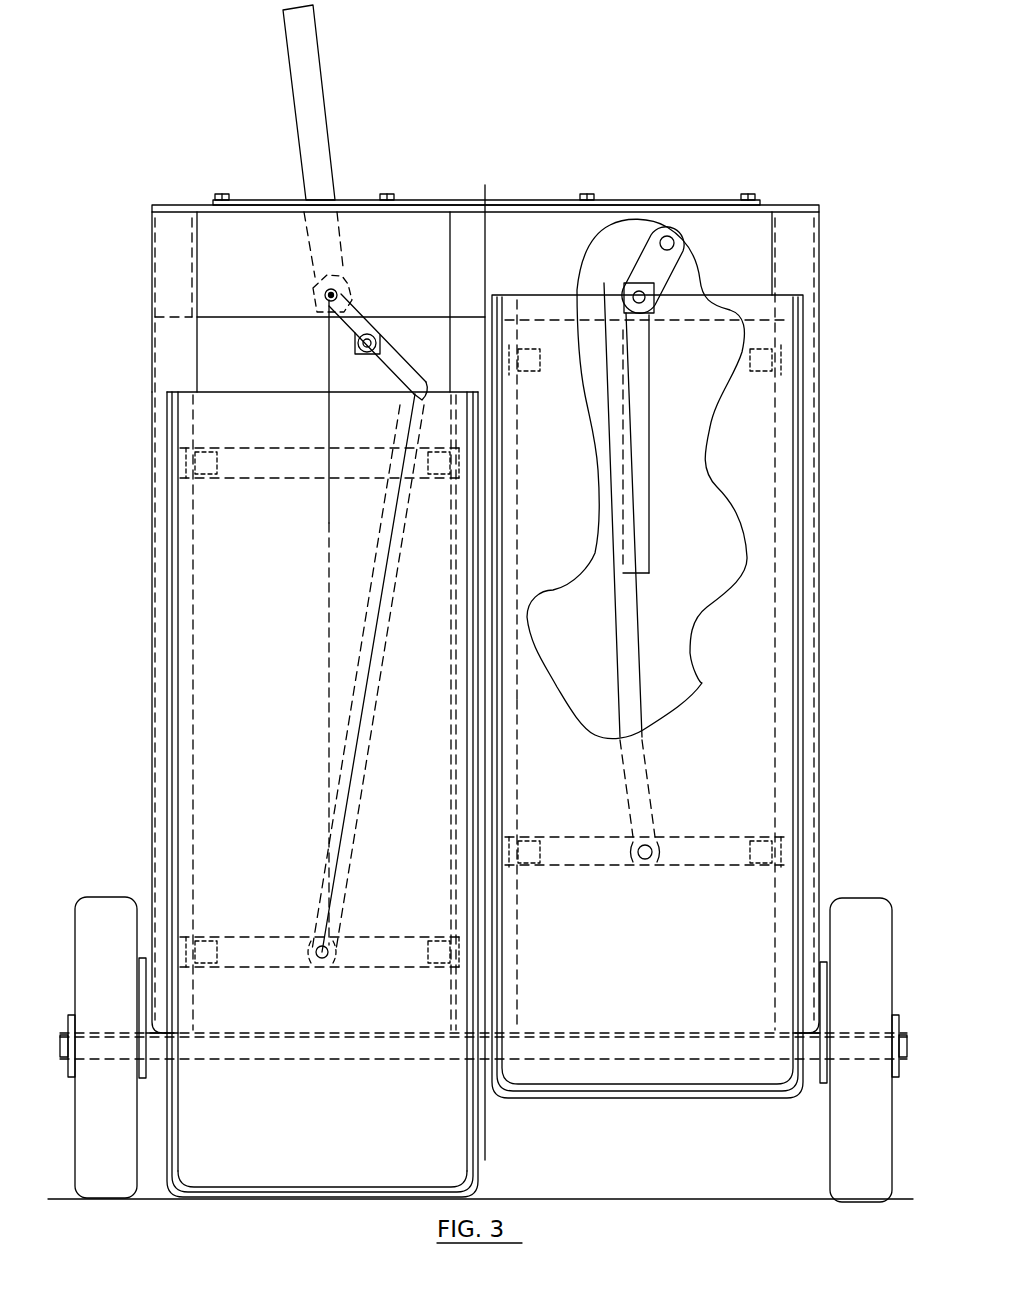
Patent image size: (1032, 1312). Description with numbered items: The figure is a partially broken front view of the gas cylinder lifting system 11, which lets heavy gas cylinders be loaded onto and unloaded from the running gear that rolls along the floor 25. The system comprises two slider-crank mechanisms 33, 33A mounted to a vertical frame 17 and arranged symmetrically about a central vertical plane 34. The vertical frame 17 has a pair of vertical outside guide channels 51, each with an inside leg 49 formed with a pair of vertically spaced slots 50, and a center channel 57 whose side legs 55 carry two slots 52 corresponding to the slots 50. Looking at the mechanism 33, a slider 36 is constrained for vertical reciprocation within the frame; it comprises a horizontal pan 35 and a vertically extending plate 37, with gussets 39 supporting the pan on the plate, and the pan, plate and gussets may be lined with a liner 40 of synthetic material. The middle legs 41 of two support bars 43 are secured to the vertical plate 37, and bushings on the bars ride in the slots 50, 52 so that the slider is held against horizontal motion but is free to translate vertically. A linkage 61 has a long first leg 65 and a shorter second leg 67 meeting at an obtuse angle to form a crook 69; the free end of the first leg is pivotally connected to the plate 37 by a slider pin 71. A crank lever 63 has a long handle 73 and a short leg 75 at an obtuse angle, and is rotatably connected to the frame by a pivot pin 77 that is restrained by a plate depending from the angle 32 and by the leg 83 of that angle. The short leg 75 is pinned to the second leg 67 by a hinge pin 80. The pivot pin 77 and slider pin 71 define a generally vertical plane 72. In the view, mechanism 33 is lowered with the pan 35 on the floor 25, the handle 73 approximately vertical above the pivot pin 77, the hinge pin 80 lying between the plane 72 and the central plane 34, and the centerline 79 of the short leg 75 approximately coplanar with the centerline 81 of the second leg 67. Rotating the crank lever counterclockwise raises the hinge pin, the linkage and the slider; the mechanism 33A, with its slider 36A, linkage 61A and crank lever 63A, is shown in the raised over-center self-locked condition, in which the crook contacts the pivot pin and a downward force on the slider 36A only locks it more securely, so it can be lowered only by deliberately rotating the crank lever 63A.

The gas cylinder lifting system 11 is at (127, 645).
The vertical frame 17 is at (148, 284).
The floor 25 is at (636, 1197).
The angle 32 is at (178, 198).
The slider-crank mechanism 33 is at (246, 1134).
The slider-crank mechanism 33A is at (597, 1100).
The central vertical plane 34 is at (487, 1135).
The horizontal pan 35 is at (392, 1193).
The slider 36 is at (170, 810).
The slider 36A is at (765, 1100).
The vertically extending plate 37 is at (266, 759).
The gussets 39 is at (165, 623).
The liner 40 is at (178, 722).
The middle legs 41 is at (235, 482).
The support bars 43 is at (291, 482).
The inside leg 49 is at (200, 865).
The slots 50 is at (185, 342).
The outside guide channels 51 is at (150, 487).
The slots 52 is at (525, 480).
The side legs 55 is at (520, 917).
The center channel 57 is at (520, 972).
The linkage 61 is at (378, 718).
The link bar 61A is at (613, 627).
The crank lever 63 is at (340, 157).
The crank lever 63A is at (655, 537).
The first leg 65 is at (350, 853).
The second leg 67 is at (400, 367).
The crook 69 is at (382, 415).
The slider pin 71 is at (330, 940).
The plane 72 is at (325, 808).
The handle 73 is at (318, 78).
The short leg 75 is at (358, 337).
The pivot pin 77 is at (340, 284).
The centerline 79 is at (350, 322).
The hinge pin 80 is at (352, 352).
The centerline 81 is at (395, 373).
The leg 83 is at (215, 250).